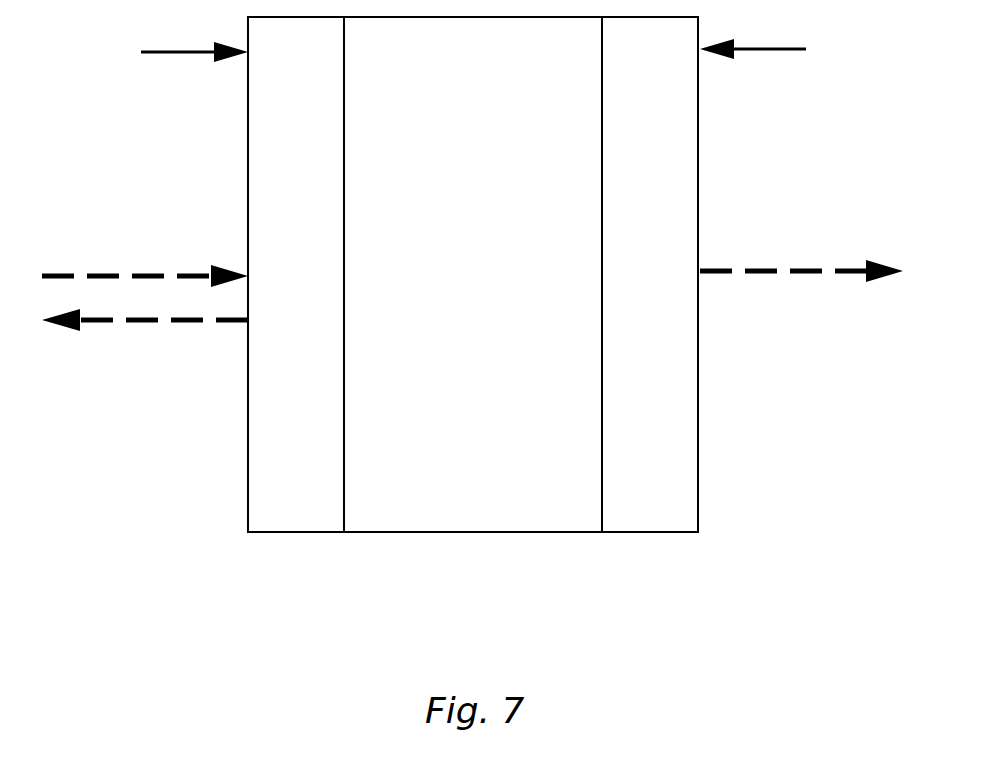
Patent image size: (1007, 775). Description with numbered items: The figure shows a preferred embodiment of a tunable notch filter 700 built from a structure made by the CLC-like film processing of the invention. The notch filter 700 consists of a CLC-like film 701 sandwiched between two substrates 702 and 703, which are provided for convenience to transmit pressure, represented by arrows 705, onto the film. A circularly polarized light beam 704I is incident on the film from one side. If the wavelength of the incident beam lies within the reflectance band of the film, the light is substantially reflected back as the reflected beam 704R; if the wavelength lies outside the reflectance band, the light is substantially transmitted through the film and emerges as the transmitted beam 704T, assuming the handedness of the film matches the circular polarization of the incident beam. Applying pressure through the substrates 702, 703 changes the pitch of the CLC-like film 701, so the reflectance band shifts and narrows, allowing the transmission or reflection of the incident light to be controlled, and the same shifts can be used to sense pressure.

The notch filter 700 is at (247, 533).
The CLC-like film 701 is at (488, 470).
The substrate 702 is at (320, 470).
The substrate 703 is at (672, 470).
The incident light beam 704I is at (135, 261).
The reflected beam 704R is at (135, 339).
The transmitted beam 704T is at (805, 296).
The pressure arrows 705 is at (470, 50).